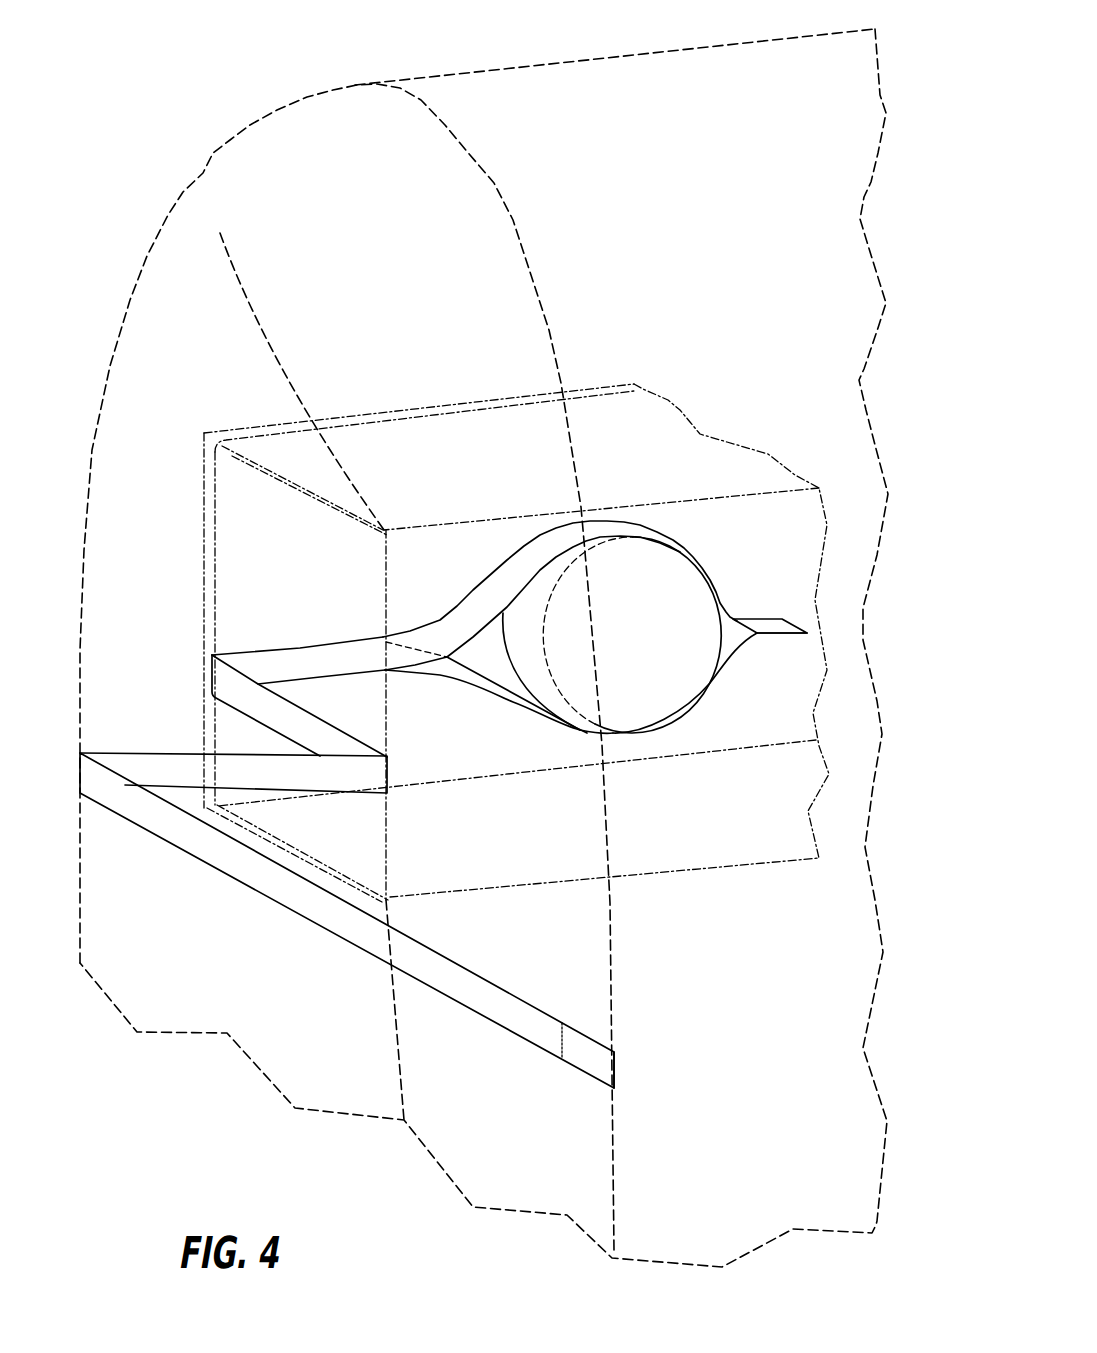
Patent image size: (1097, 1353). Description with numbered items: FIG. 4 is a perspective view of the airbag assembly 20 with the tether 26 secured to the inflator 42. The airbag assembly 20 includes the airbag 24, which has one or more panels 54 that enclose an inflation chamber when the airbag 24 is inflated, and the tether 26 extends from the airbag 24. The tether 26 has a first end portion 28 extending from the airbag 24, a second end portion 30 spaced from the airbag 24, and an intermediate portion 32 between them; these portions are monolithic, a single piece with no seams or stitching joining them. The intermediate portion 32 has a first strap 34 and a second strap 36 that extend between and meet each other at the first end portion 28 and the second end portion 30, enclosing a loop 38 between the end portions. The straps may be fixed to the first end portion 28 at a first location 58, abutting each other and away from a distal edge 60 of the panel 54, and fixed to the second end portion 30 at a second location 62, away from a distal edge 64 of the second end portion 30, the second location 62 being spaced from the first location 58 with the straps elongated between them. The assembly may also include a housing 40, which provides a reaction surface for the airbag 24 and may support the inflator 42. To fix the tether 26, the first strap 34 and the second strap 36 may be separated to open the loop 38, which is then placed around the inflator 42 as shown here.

The airbag assembly 20 is at (145, 499).
The airbag 24 is at (805, 157).
The tether 26 is at (305, 900).
The first end portion 28 is at (588, 1057).
The second end portion 30 is at (780, 637).
The intermediate portion 32 is at (527, 570).
The first strap 34 is at (564, 720).
The second strap 36 is at (550, 548).
The loop 38 is at (486, 666).
The housing 40 is at (454, 404).
The inflator 42 is at (677, 587).
The panel 54 is at (256, 168).
The first location 58 is at (362, 638).
The distal edge 60 is at (617, 1068).
The second location 62 is at (757, 640).
The distal edge 64 is at (793, 634).